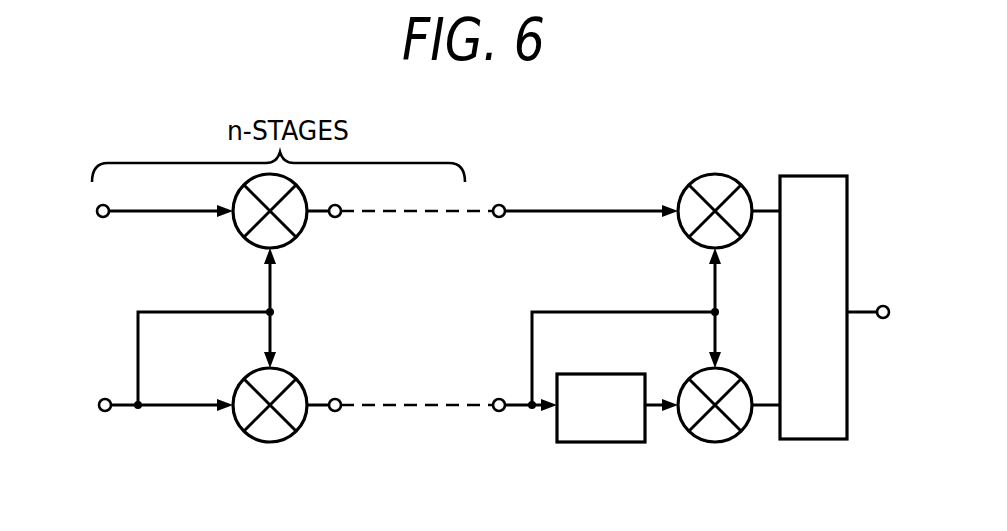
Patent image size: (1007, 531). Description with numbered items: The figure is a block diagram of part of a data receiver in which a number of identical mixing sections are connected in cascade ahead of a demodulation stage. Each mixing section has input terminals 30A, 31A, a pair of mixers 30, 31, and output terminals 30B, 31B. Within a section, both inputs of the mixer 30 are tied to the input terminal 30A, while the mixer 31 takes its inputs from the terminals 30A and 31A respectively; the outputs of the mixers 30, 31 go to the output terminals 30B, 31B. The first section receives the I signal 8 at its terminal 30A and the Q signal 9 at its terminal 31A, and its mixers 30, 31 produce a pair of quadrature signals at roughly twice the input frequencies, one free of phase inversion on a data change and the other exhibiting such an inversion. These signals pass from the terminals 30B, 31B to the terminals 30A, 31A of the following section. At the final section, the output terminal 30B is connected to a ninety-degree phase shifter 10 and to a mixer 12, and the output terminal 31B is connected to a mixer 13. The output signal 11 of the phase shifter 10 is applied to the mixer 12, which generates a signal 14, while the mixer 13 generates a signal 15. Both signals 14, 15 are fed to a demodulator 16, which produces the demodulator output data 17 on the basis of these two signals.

The I signal 8 is at (123, 401).
The Q signal 9 is at (139, 208).
The 90-degree phase shifter 10 is at (567, 444).
The output signal of the phase shifter 11 is at (657, 400).
The mixer 12 is at (718, 444).
The mixer 13 is at (713, 174).
The signal to be exposed to demodulation 14 is at (766, 398).
The signal to be exposed to demodulation 15 is at (762, 215).
The demodulator 16 is at (848, 426).
The demodulator output data 17 is at (863, 315).
The mixer 30 is at (289, 442).
The mixer 31 is at (298, 238).
The input terminal 30A is at (101, 398).
The output terminal 30B is at (339, 398).
The input terminal 31A is at (100, 217).
The output terminal 31B is at (339, 203).